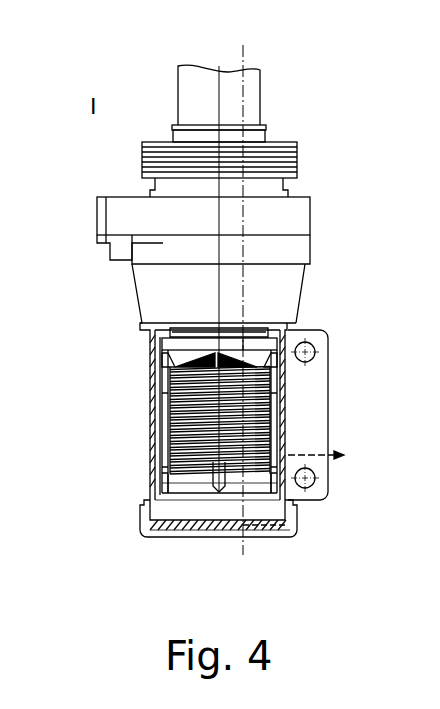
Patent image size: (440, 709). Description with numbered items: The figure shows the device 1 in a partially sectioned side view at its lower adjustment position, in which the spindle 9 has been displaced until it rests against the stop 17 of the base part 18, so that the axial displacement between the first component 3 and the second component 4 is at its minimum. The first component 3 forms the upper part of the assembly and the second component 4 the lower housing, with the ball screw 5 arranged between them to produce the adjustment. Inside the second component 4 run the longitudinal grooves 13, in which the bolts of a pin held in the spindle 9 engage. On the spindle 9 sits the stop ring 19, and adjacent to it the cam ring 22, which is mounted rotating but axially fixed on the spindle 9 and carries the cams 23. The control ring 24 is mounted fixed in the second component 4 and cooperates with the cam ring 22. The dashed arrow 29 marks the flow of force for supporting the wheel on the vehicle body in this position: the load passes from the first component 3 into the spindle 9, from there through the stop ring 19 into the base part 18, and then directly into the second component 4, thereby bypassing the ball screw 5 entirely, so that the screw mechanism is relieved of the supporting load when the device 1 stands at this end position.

The device 1 is at (308, 74).
The first component 3 is at (250, 105).
The ball screw 5 is at (125, 303).
The control ring 24 is at (290, 323).
The spindle 9 is at (263, 383).
The second component 4 is at (152, 407).
The longitudinal grooves 13 is at (270, 433).
The cam ring 22 is at (177, 483).
The cams 23 is at (212, 492).
The stop 17 is at (173, 520).
The stop ring 19 is at (200, 507).
The base part 18 is at (250, 525).
The dashed arrow 29 is at (285, 530).